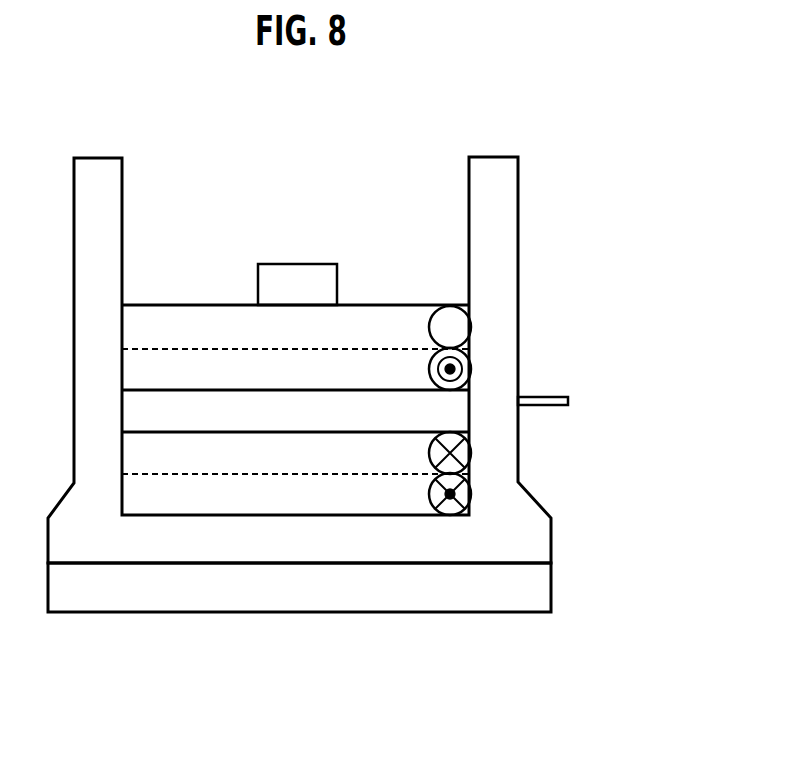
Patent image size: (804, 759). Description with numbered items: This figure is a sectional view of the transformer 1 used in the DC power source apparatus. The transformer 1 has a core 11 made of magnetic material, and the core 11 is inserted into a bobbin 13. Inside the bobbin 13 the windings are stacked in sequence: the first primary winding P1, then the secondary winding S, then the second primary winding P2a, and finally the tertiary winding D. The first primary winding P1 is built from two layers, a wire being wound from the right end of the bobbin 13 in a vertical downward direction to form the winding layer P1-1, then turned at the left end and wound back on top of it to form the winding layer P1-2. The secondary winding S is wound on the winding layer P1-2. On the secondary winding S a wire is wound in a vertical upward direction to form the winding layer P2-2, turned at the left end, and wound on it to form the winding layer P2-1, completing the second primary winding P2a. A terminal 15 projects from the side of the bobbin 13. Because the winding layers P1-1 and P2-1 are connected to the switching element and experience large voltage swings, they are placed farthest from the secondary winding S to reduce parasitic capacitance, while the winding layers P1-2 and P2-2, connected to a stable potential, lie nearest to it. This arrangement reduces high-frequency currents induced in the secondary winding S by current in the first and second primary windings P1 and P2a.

The transformer 1 is at (391, 145).
The core 11 is at (158, 597).
The bobbin 13 is at (540, 540).
The terminal 15 is at (553, 396).
The first primary winding P1 is at (472, 432).
The second primary winding P2a is at (472, 390).
The winding layer P1-1 is at (372, 494).
The winding layer P1-2 is at (296, 453).
The winding layer P2-1 is at (296, 327).
The winding layer P2-2 is at (296, 369).
The secondary winding S is at (295, 415).
The tertiary winding D is at (297, 284).